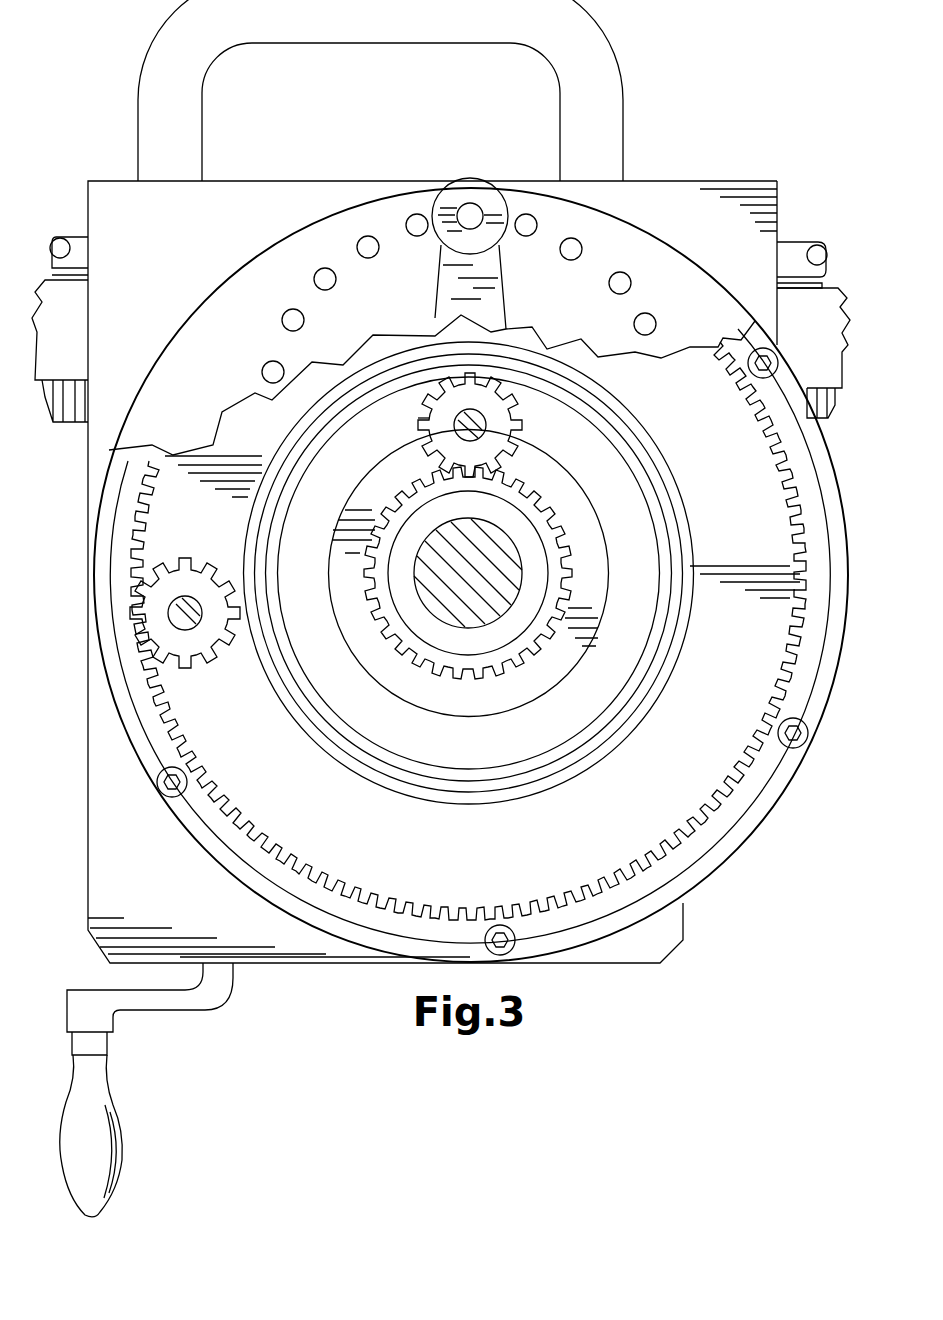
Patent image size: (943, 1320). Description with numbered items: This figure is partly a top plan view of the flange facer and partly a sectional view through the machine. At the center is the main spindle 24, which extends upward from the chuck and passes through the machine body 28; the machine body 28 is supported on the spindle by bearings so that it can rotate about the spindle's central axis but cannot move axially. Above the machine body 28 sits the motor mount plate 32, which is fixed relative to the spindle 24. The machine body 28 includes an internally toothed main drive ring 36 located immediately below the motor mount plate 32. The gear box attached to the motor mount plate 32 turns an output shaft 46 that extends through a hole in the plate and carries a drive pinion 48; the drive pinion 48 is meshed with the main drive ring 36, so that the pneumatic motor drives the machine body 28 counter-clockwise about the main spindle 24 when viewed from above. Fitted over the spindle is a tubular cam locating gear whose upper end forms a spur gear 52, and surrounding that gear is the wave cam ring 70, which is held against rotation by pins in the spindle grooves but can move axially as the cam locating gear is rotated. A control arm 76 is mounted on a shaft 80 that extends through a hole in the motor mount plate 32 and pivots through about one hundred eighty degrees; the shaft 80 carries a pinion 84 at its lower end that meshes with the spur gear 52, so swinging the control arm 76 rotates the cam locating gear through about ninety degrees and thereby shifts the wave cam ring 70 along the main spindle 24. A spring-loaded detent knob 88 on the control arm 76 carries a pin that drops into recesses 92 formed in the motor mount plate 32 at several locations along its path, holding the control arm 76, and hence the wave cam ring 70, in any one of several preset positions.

The main spindle 24 is at (510, 587).
The machine body 28 is at (66, 864).
The motor mount plate 32 is at (703, 290).
The main drive ring 36 is at (725, 852).
The output shaft 46 is at (190, 636).
The drive pinion 48 is at (197, 562).
The spur gear 52 is at (472, 660).
The wave cam ring 70 is at (390, 672).
The control arm 76 is at (492, 300).
The shaft 80 is at (487, 430).
The pinion 84 is at (423, 413).
The spring-loaded detent knob 88 is at (470, 184).
The recesses 92 is at (283, 321).